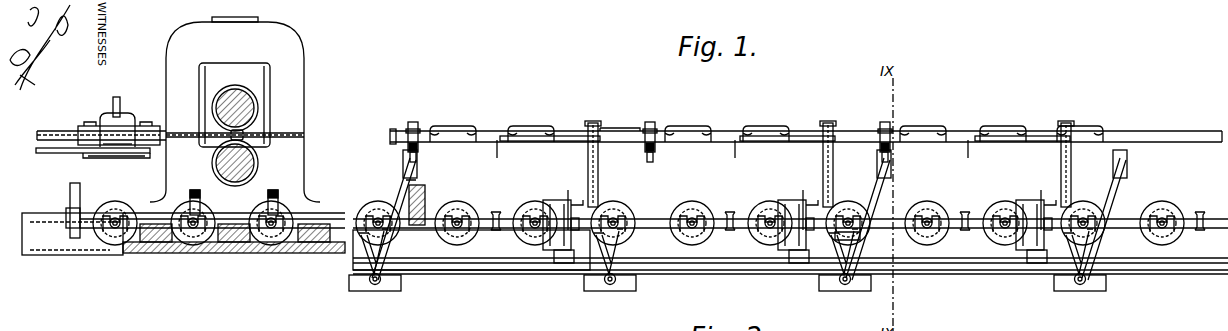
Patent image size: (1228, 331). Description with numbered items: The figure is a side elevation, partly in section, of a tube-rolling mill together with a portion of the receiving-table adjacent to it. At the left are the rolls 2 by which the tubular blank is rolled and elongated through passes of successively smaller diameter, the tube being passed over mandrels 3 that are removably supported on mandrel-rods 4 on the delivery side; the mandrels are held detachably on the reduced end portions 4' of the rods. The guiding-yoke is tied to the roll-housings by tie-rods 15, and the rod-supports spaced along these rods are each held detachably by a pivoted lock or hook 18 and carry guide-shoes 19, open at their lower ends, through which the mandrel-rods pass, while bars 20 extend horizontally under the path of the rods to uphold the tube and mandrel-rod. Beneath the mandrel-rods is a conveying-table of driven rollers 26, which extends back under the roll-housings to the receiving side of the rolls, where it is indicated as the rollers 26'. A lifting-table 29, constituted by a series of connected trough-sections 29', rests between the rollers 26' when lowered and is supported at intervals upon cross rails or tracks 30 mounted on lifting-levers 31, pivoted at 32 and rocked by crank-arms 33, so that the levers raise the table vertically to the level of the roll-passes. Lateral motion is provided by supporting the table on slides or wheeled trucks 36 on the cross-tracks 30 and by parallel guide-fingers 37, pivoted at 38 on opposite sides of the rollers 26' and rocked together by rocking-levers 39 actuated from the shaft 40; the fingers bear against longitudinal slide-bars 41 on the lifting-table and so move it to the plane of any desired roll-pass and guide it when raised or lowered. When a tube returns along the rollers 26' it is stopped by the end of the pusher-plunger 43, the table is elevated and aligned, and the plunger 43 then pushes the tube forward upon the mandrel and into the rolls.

The rolls 2 is at (258, 108).
The mandrels 3 is at (210, 133).
The mandrel-rods 4 is at (109, 136).
The reduced end portions 4' is at (278, 140).
The tie-rods 15 is at (64, 131).
The pivoted lock or hook 18 is at (124, 118).
The guide-shoes 19 is at (118, 158).
The bars 20 is at (86, 153).
The conveying-table rollers 26 is at (101, 209).
The conveying-table rollers on receiving side 26' is at (475, 214).
The lifting-table 29 is at (620, 113).
The trough-sections 29' is at (766, 141).
The cross rails or tracks 30 is at (420, 148).
The lifting-levers 31 is at (402, 180).
The pivot 32 is at (376, 284).
The crank-arms 33 is at (364, 240).
The slides or wheeled trucks 36 is at (418, 128).
The guide-fingers 37 is at (598, 160).
The pivots of guide-fingers 38 is at (578, 205).
The rocking-levers 39 is at (856, 240).
The shaft 40 is at (752, 263).
The longitudinal slide-bars 41 is at (558, 136).
The pusher-plunger 43 is at (1218, 131).